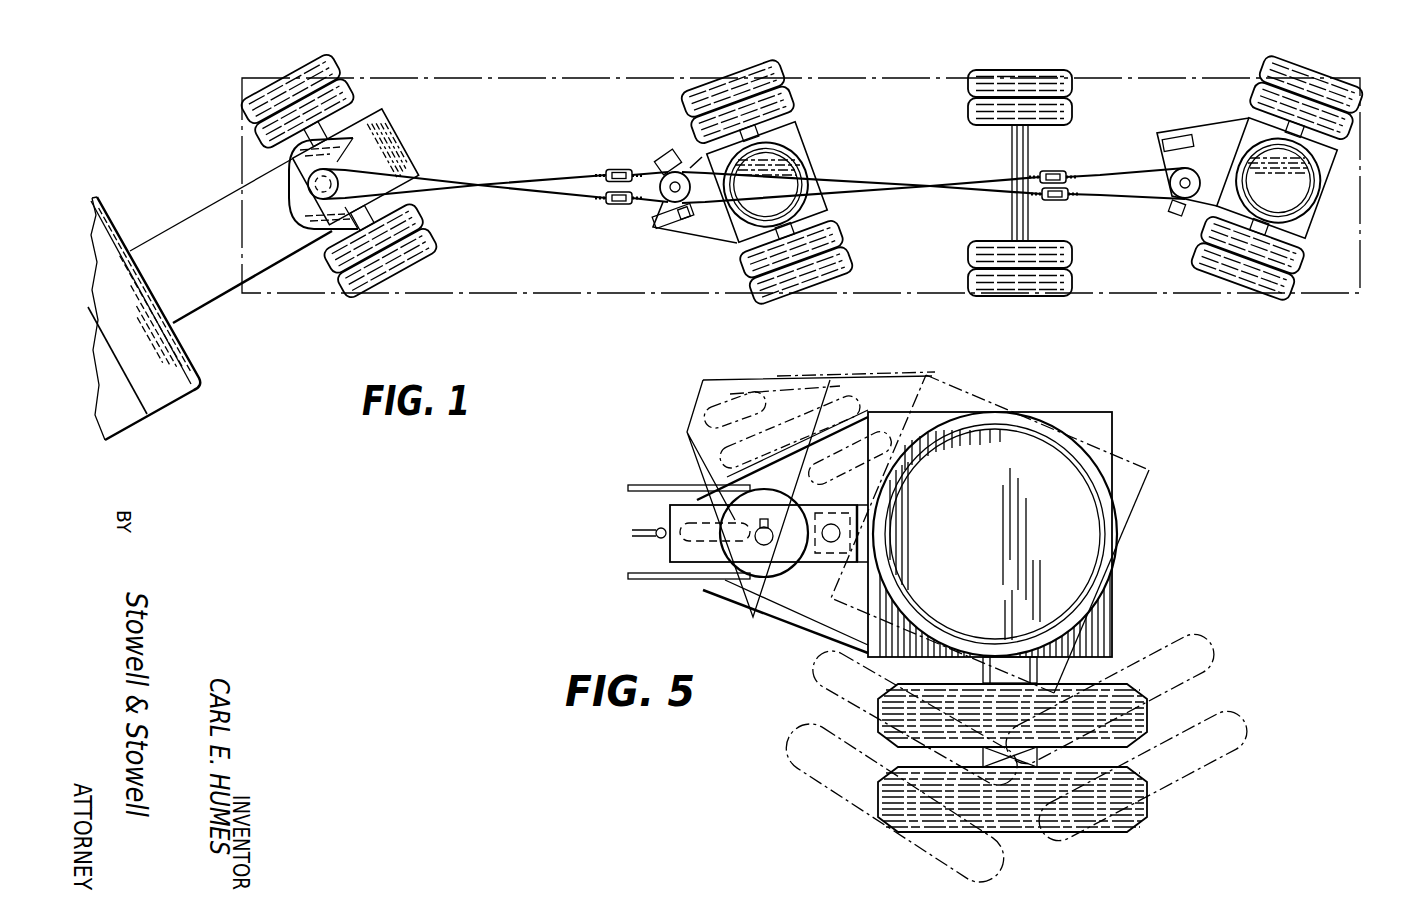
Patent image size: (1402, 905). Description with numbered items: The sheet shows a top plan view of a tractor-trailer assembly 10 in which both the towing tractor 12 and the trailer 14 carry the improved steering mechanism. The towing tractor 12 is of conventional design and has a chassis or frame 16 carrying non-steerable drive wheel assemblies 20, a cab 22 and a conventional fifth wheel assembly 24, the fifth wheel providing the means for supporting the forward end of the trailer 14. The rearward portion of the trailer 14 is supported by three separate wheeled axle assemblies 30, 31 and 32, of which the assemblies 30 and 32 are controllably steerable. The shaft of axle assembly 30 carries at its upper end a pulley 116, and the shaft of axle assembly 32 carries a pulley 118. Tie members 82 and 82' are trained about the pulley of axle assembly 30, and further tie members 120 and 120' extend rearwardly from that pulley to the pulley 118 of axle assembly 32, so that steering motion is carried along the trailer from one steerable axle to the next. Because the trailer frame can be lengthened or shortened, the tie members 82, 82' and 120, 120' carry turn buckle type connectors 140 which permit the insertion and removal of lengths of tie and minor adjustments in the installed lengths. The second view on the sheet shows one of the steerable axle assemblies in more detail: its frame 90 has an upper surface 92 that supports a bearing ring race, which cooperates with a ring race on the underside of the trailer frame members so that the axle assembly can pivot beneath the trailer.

In FIG. 1, the tractor-trailer assembly 10 is at (602, 318).
In FIG. 1, the towing tractor 12 is at (196, 388).
In FIG. 1, the trailer 14 is at (664, 295).
In FIG. 1, the chassis or frame 16 is at (207, 207).
In FIG. 1, the drive wheel assemblies 20 is at (226, 100).
In FIG. 1, the cab 22 is at (133, 410).
In FIG. 1, the fifth wheel assembly 24 is at (298, 214).
In FIG. 1, the wheeled axle assembly 30 is at (809, 307).
In FIG. 1, the wheeled axle assembly 31 is at (1022, 308).
In FIG. 1, the wheeled axle assembly 32 is at (1212, 305).
In FIG. 1, the tie member 82 is at (495, 201).
In FIG. 1, the tie member 82' is at (495, 177).
In FIG. 1, the pulley 116 is at (696, 242).
In FIG. 1, the pulley 118 is at (1172, 175).
In FIG. 1, the tie member 120 is at (933, 201).
In FIG. 1, the tie member 120' is at (933, 164).
In FIG. 1, the turn buckle type connectors 140 is at (607, 170).
In FIG. 5, the frame 90 is at (1092, 430).
In FIG. 5, the upper surface 92 is at (958, 559).